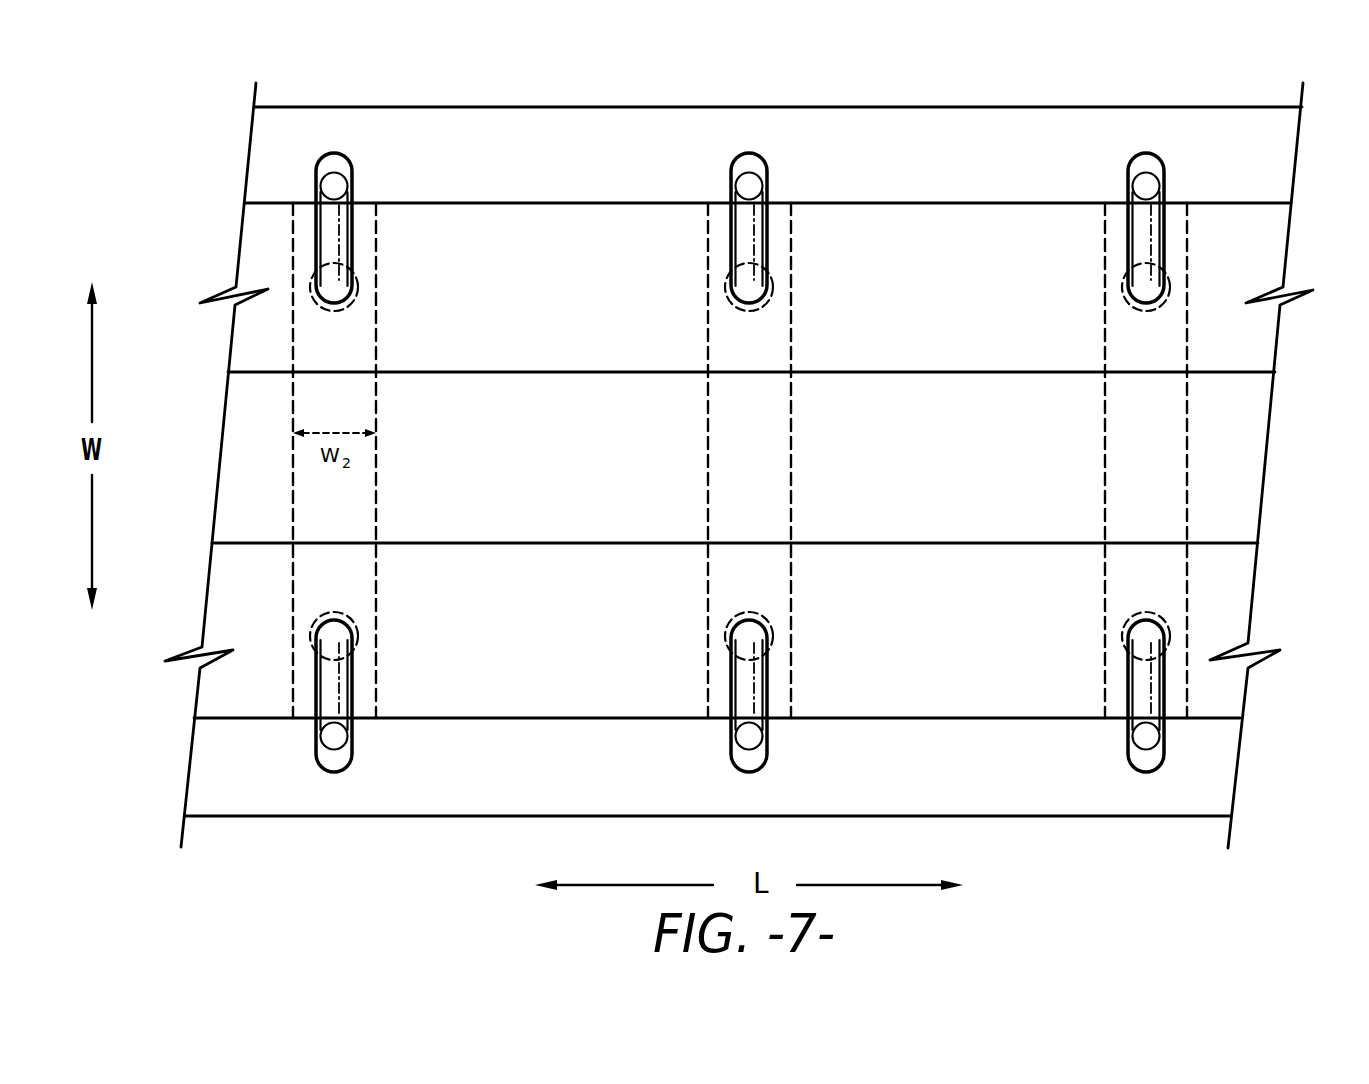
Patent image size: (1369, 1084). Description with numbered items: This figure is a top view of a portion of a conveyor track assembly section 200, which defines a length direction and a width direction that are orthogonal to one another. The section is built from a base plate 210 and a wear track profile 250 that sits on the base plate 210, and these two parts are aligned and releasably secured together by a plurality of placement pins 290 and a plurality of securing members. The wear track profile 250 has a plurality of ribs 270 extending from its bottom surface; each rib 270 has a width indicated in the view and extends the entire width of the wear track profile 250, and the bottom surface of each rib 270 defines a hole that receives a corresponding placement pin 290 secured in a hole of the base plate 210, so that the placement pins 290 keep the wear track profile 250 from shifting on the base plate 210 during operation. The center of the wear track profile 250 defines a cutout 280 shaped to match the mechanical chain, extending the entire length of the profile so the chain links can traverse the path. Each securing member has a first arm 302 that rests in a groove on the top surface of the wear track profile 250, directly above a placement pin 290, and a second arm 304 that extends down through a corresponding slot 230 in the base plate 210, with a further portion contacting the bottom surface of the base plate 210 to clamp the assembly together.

The conveyor track assembly section 200 is at (168, 147).
The base plate 210 is at (497, 138).
The slot 230 is at (1143, 121).
The wear track profile 250 is at (517, 237).
The rib 270 is at (1170, 122).
The cutout 280 is at (1228, 447).
The placement pin 290 is at (1133, 307).
The first arm 302 is at (1143, 238).
The second arm 304 is at (1147, 188).